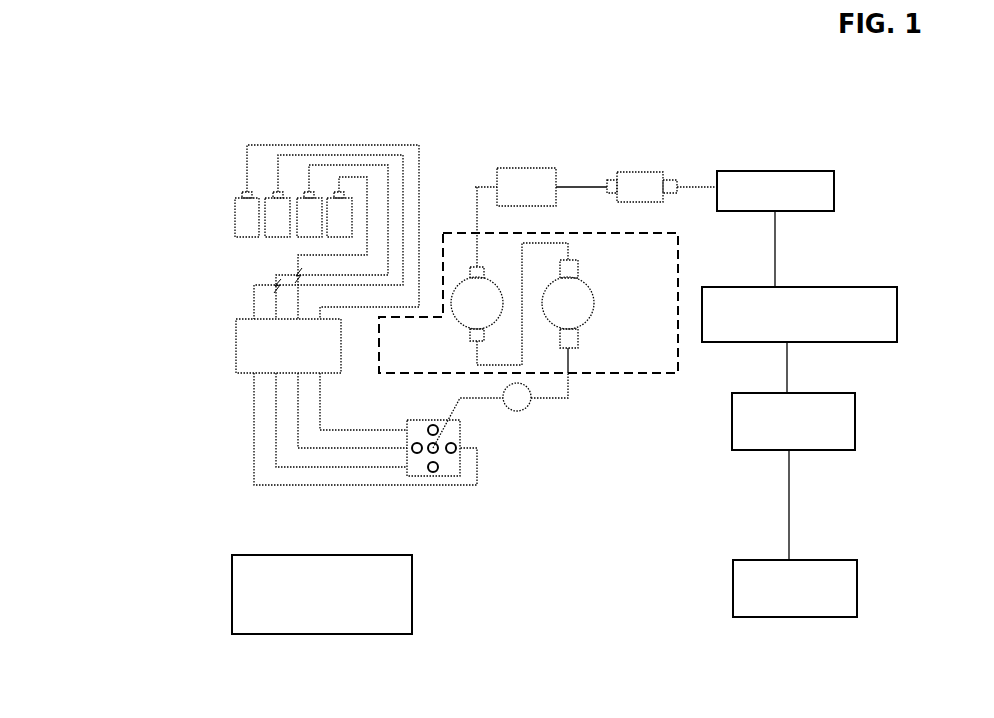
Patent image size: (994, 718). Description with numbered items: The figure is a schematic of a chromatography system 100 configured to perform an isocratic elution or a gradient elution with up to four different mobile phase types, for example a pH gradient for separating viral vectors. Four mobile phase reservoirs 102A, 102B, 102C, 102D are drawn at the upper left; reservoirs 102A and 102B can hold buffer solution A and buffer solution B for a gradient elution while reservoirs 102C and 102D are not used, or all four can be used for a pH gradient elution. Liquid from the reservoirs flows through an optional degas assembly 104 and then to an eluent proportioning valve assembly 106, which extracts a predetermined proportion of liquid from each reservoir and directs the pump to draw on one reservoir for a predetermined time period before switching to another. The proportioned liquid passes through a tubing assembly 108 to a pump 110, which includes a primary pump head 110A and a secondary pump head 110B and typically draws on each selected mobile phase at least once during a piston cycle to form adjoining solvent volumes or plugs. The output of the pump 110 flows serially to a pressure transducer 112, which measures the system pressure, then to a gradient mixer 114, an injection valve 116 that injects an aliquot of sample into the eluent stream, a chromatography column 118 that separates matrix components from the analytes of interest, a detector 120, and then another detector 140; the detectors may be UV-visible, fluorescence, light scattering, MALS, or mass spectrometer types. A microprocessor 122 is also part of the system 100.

The chromatography system 100 is at (411, 88).
The mobile phase reservoir 102A is at (328, 238).
The mobile phase reservoir 102B is at (297, 238).
The mobile phase reservoir 102C is at (265, 238).
The mobile phase reservoir 102D is at (235, 197).
The degas assembly 104 is at (236, 365).
The eluent proportioning valve assembly 106 is at (460, 435).
The tubing assembly 108 is at (530, 402).
The pump 110 is at (638, 373).
The primary pump head 110A is at (590, 312).
The secondary pump head 110B is at (497, 282).
The pressure transducer 112 is at (557, 177).
The gradient mixer 114 is at (663, 177).
The injection valve 116 is at (788, 171).
The chromatography column 118 is at (827, 287).
The detector 120 is at (853, 403).
The microprocessor 122 is at (317, 635).
The detector 140 is at (855, 578).